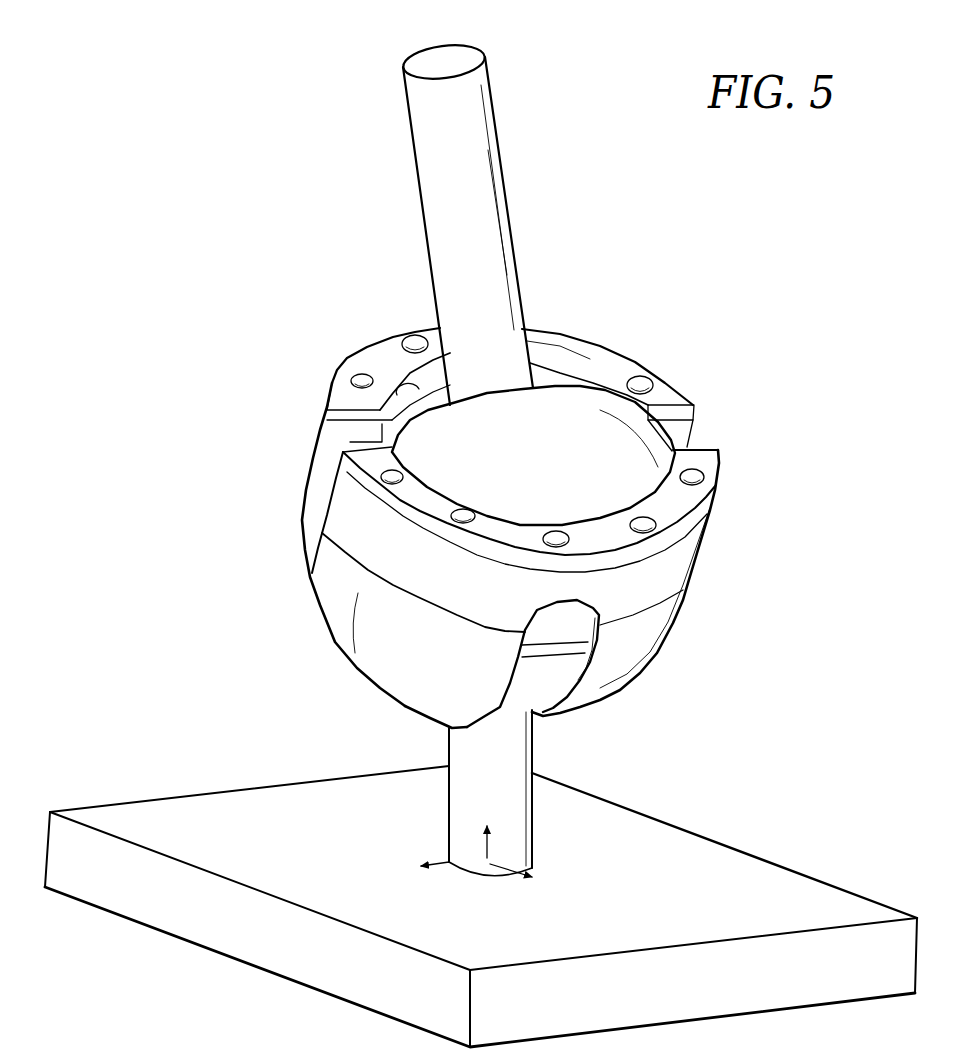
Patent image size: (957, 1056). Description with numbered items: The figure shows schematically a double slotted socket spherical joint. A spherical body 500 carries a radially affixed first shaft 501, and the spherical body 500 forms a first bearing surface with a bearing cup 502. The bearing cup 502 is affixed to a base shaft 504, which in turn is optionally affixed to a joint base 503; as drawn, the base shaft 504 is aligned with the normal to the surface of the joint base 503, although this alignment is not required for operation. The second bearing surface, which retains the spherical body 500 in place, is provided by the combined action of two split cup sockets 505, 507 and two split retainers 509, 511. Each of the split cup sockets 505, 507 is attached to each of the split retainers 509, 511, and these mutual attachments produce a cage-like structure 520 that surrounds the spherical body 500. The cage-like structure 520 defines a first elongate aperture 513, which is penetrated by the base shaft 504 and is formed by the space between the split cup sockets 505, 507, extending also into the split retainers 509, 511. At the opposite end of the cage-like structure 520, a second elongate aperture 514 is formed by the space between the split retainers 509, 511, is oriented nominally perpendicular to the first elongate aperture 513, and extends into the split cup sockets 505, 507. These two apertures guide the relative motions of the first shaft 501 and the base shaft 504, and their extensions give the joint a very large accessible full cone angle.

The spherical body 500 is at (627, 653).
The first shaft 501 is at (480, 127).
The bearing cup 502 is at (540, 682).
The joint base 503 is at (722, 867).
The base shaft 504 is at (472, 737).
The split cup socket 505 is at (352, 635).
The split cup socket 507 is at (682, 622).
The split retainer 509 is at (578, 339).
The split retainer 511 is at (620, 448).
The first elongate aperture 513 is at (582, 678).
The second elongate aperture 514 is at (397, 395).
The cage-like structure 520 is at (305, 258).